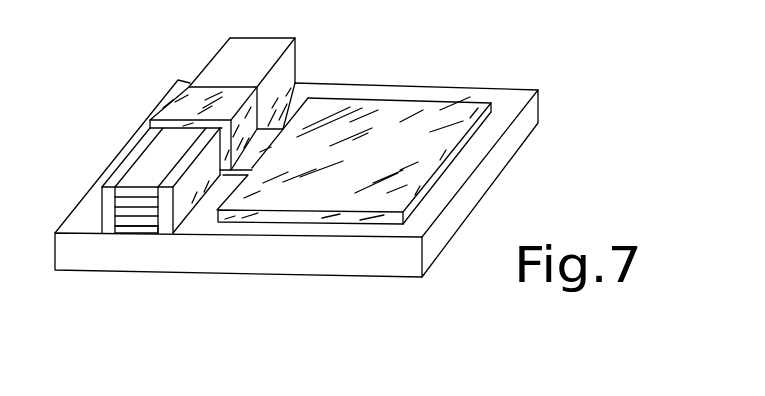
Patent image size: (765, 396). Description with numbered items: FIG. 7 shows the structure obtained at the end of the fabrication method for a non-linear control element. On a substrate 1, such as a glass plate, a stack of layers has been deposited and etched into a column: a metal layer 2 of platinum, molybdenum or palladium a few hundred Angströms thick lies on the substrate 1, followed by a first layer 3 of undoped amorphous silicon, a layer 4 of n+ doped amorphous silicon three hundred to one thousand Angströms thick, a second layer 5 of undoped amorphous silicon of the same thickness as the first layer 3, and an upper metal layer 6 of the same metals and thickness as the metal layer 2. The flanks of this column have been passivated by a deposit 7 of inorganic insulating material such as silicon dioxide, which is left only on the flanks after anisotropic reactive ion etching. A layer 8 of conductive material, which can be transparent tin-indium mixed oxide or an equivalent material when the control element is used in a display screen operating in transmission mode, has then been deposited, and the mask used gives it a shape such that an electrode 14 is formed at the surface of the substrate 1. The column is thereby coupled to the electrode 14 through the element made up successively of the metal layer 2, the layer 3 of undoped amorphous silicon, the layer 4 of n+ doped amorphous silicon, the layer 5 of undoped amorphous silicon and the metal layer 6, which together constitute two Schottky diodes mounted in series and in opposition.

The substrate 1 is at (470, 202).
The metal layer 2 is at (152, 229).
The first layer of undoped amorphous silicon 3 is at (142, 220).
The layer of n+ doped amorphous silicon 4 is at (128, 212).
The second layer of undoped amorphous silicon 5 is at (137, 204).
The metal layer 6 is at (122, 192).
The deposit of inorganic insulating material 7 is at (279, 44).
The layer of conductive material 8 is at (415, 104).
The electrode 14 is at (318, 207).